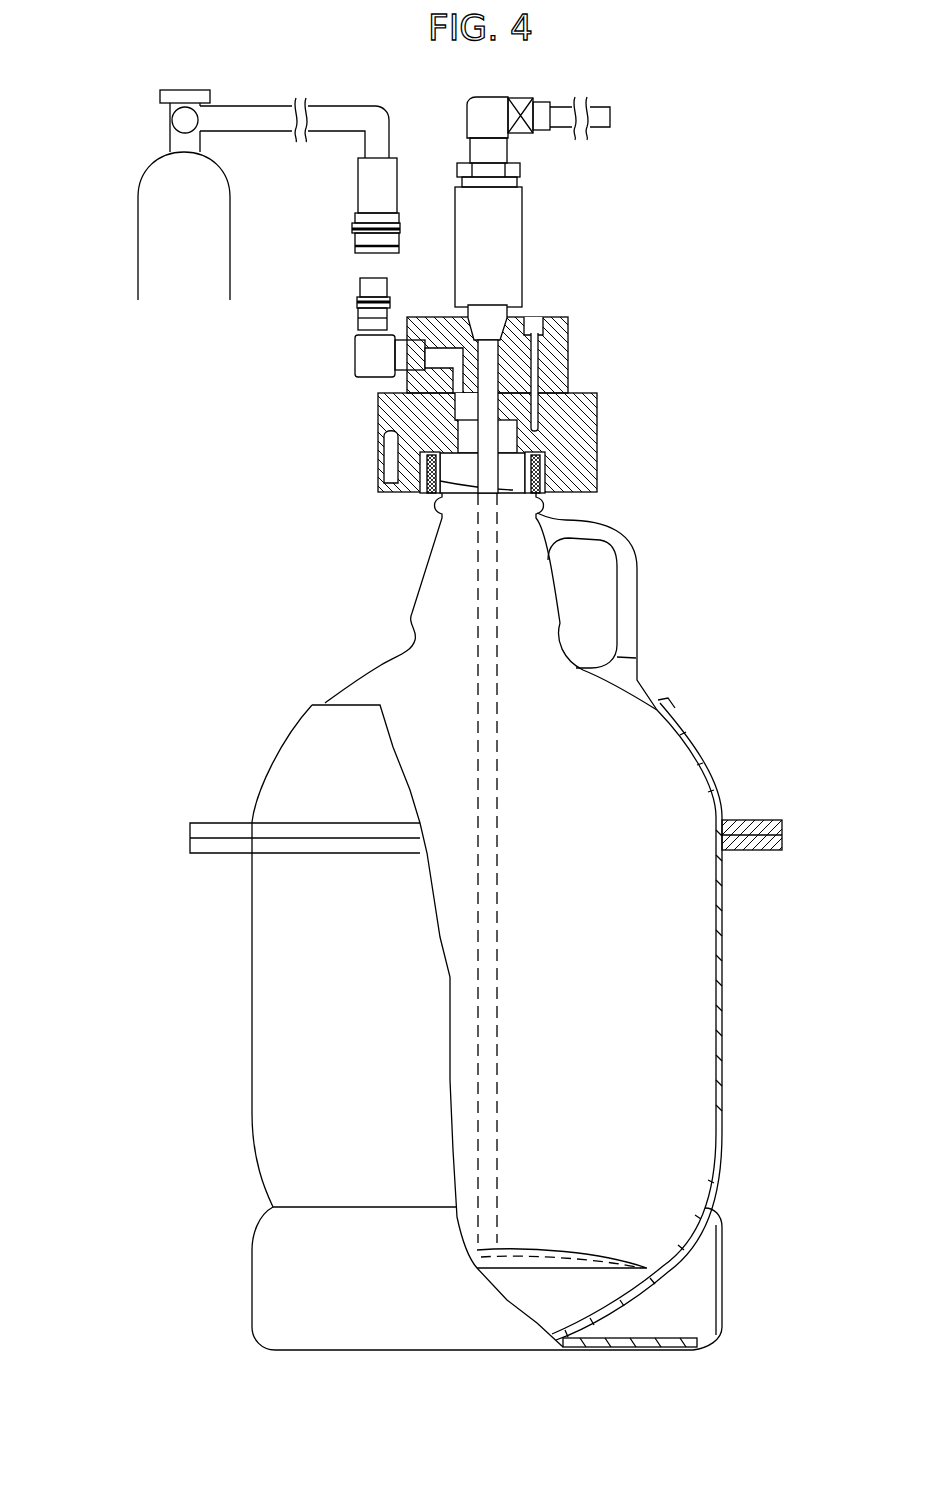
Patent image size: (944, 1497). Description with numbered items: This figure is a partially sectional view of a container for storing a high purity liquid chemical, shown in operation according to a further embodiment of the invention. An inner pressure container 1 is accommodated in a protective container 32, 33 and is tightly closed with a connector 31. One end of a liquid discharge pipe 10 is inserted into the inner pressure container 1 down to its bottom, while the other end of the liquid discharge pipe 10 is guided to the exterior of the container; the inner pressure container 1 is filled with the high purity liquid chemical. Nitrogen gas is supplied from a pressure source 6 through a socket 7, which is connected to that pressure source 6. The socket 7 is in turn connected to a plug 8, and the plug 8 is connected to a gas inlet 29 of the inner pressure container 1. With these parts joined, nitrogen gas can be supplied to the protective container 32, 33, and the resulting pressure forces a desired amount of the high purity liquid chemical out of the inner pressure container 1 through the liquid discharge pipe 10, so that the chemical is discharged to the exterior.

The inner pressure container 1 is at (633, 777).
The pressure source 6 is at (165, 235).
The socket 7 is at (373, 182).
The plug 8 is at (360, 305).
The liquid discharge pipe 10 is at (487, 947).
The gas inlet 29 is at (460, 376).
The connector 31 is at (555, 358).
The protective container 32 is at (300, 1020).
The protective container 33 is at (318, 780).